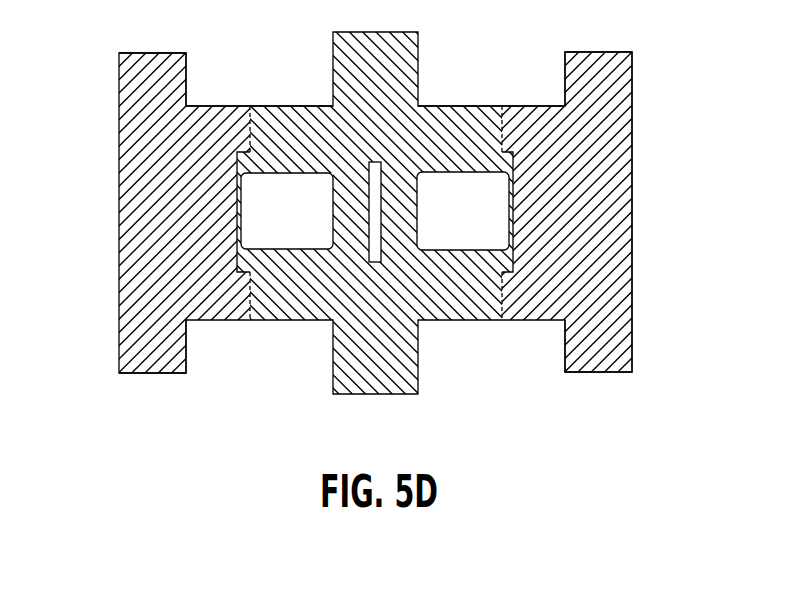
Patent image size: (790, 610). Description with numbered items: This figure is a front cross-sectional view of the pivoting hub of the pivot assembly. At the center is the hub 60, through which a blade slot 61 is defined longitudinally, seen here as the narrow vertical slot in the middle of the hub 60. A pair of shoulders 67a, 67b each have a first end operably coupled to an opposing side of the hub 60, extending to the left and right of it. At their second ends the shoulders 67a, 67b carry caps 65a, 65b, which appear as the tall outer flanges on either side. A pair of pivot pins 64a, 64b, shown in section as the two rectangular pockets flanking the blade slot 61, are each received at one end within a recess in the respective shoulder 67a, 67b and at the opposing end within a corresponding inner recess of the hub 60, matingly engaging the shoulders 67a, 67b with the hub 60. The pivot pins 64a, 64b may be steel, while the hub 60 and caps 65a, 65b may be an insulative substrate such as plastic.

The hub 60 is at (391, 32).
The blade slot 61 is at (382, 240).
The pivot pin 64a is at (313, 222).
The pivot pin 64b is at (483, 223).
The cap 65a is at (119, 208).
The cap 65b is at (632, 180).
The shoulder 67a is at (212, 106).
The shoulder 67b is at (538, 105).